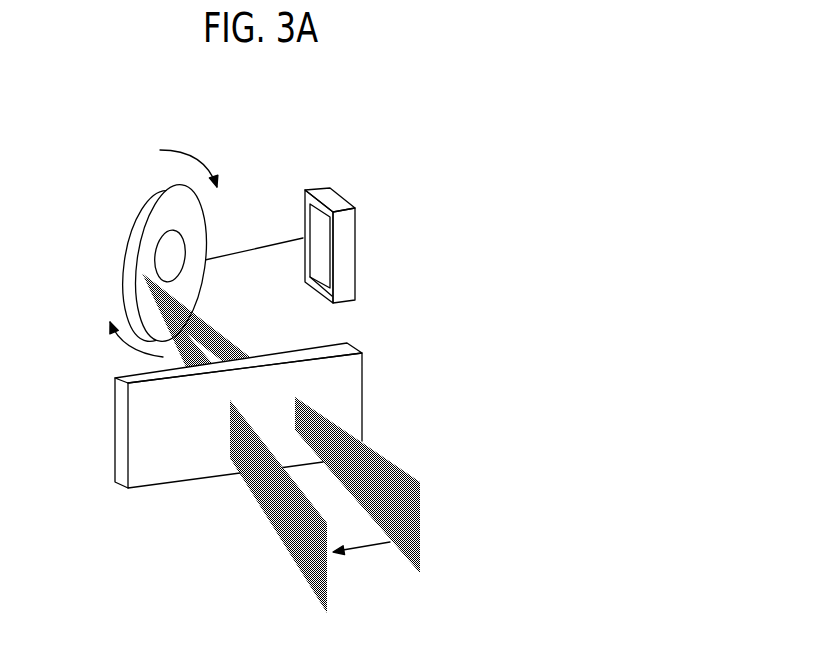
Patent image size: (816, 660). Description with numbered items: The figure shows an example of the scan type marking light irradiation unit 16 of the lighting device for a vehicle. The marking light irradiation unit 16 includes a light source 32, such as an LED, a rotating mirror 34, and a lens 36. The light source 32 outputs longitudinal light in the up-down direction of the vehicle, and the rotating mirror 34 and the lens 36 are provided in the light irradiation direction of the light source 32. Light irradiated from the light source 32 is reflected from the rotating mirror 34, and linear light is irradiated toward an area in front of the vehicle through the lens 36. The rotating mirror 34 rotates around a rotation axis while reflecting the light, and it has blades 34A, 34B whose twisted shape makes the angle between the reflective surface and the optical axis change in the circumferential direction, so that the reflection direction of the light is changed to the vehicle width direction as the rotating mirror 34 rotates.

The scan type marking light irradiation unit 16 is at (375, 145).
The light source 32 is at (340, 240).
The rotating mirror 34 is at (150, 192).
The blade 34A is at (133, 252).
The blade 34B is at (190, 285).
The lens 36 is at (362, 410).